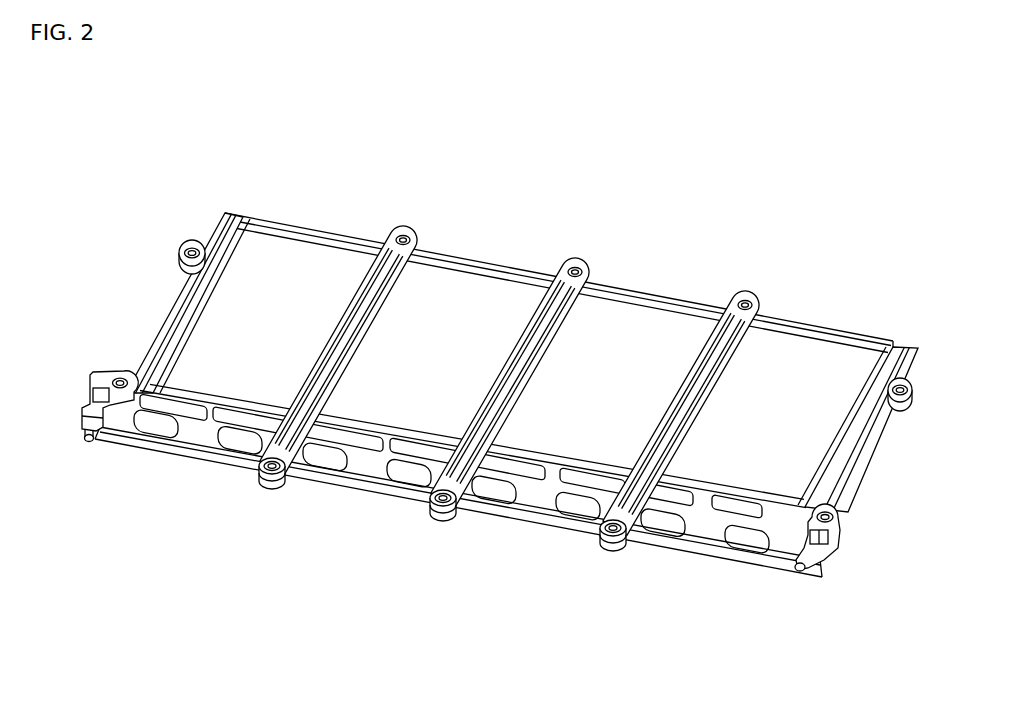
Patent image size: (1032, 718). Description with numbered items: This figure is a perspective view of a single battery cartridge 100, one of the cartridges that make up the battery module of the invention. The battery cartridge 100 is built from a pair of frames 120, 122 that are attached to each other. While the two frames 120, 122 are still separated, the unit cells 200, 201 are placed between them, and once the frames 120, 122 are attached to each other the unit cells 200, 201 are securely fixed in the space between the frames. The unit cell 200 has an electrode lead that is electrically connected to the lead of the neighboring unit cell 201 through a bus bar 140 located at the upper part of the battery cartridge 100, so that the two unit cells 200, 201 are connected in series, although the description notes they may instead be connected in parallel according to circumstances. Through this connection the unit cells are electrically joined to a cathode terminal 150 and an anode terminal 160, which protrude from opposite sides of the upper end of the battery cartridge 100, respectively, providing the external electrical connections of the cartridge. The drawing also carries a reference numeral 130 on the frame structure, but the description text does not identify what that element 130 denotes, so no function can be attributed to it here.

The battery cartridge 100 is at (205, 178).
The frame 120 is at (430, 507).
The frame 122 is at (450, 513).
The frame 130 is at (612, 300).
The bus bar 140 is at (313, 455).
The cathode terminal 150 is at (800, 568).
The anode terminal 160 is at (88, 443).
The unit cell 200 is at (822, 360).
The unit cell 201 is at (663, 327).